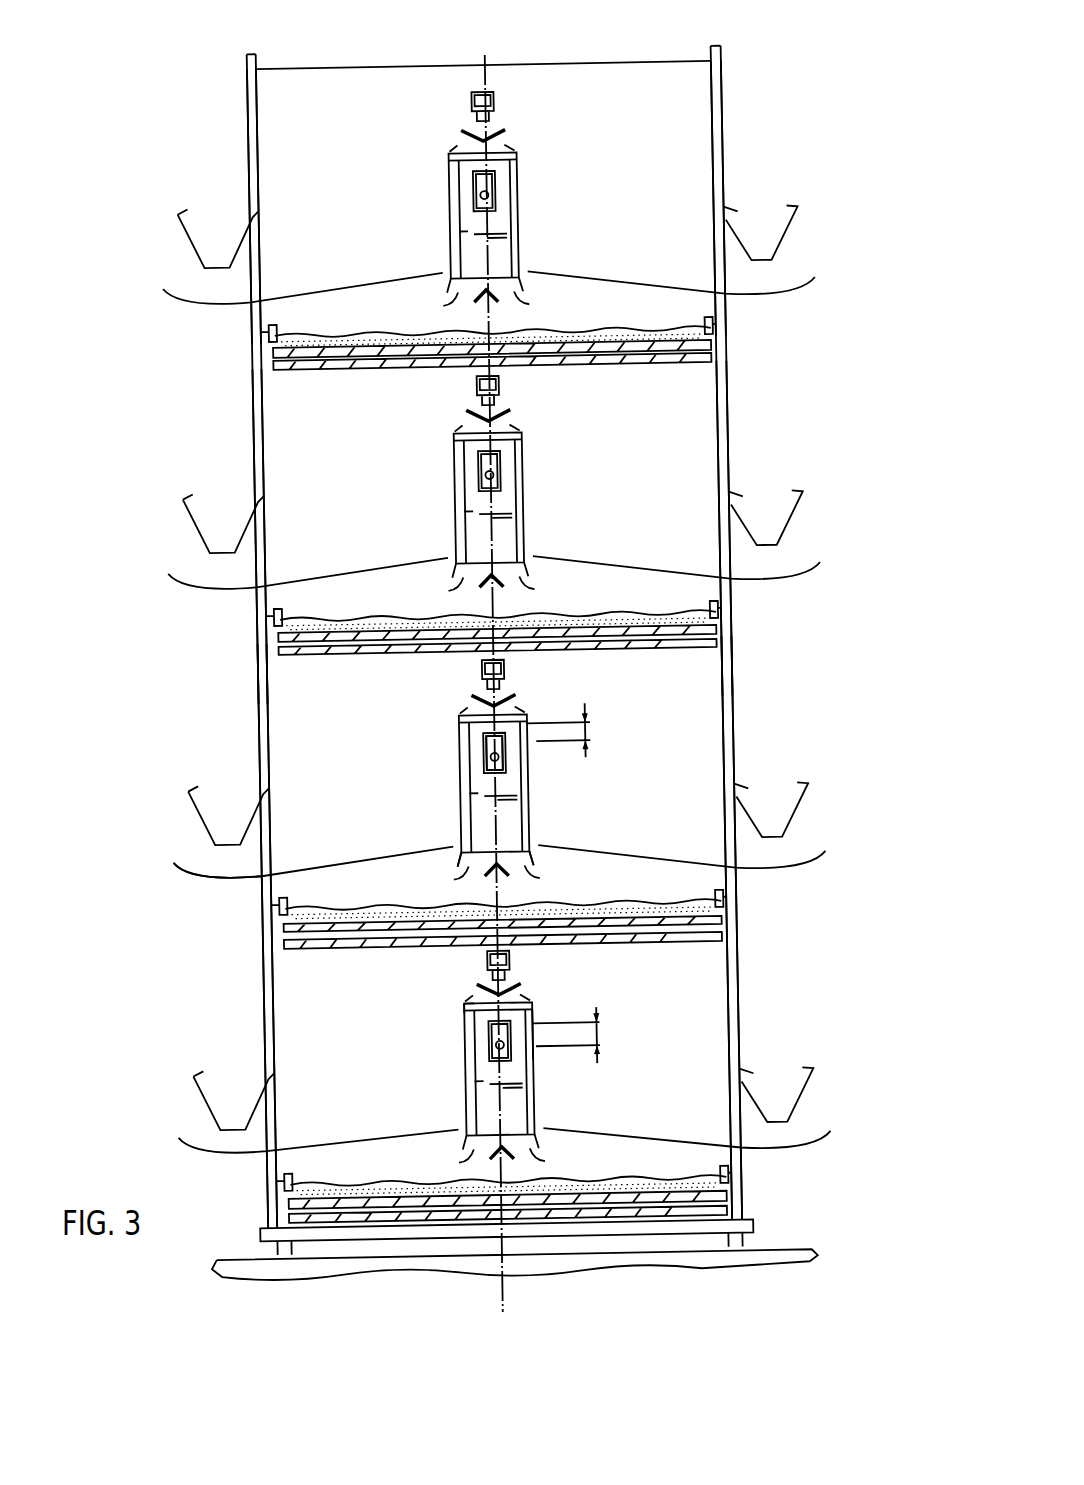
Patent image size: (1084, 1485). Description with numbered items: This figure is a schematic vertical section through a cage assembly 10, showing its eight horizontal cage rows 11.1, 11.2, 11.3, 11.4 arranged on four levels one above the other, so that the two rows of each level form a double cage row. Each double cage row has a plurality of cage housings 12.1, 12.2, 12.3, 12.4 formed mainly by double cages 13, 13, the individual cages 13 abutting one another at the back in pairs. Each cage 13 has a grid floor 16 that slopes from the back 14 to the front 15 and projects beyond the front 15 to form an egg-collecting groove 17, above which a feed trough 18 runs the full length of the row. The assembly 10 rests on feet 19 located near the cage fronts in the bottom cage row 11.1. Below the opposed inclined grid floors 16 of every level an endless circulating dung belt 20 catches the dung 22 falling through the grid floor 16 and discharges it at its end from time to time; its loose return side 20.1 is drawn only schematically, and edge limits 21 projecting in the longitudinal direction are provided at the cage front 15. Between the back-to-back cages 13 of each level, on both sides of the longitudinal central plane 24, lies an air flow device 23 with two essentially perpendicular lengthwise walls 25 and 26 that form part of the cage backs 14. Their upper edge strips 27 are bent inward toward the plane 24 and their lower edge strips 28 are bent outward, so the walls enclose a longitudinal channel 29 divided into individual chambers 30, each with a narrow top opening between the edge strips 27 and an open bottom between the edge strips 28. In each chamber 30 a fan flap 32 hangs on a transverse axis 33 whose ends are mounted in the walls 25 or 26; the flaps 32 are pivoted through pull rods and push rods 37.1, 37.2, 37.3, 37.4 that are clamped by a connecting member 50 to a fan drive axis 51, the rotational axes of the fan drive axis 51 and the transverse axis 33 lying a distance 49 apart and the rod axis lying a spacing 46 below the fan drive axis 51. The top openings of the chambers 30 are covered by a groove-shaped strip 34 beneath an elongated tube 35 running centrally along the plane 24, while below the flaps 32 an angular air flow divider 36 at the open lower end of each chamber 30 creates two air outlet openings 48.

The cage assembly 10 is at (637, 53).
The cage row 11.1 is at (729, 1045).
The cage row 11.2 is at (734, 767).
The cage row 11.3 is at (733, 447).
The cage row 11.4 is at (725, 172).
The cage housing 12.1 is at (228, 986).
The cage housing 12.2 is at (233, 718).
The cage housing 12.3 is at (233, 432).
The cage housing 12.4 is at (239, 122).
The cage 13 is at (689, 122).
The back 14 is at (446, 820).
The front 15 is at (247, 659).
The grid floor 16 is at (596, 280).
The egg-collecting groove 17 is at (185, 885).
The feed trough 18 is at (787, 243).
The feet 19 is at (256, 1248).
The dung belt 20 is at (654, 930).
The return side of belt 20.1 is at (346, 364).
The edge limits 21 is at (265, 321).
The dung 22 is at (655, 337).
The air flow device 23 is at (517, 646).
The longitudinal central plane 24 is at (478, 68).
The lengthwise wall 25 is at (448, 204).
The lengthwise wall 26 is at (519, 197).
The upper edge strips 27 is at (519, 149).
The lower edge strips 28 is at (435, 859).
The channel 29 is at (512, 1036).
The chamber 30 is at (515, 243).
The fan flap 32 is at (463, 238).
The transverse axis 33 is at (517, 171).
The strip 34 is at (462, 140).
The elongated tube 35 is at (496, 92).
The angular air flow divider 36 is at (501, 298).
The pull rod and push rod 37.1 is at (469, 1045).
The pull rod and push rod 37.2 is at (471, 760).
The pull rod and push rod 37.3 is at (473, 470).
The pull rod and push rod 37.4 is at (476, 187).
The spacing 46 is at (582, 1034).
The air outlet openings 48 is at (451, 299).
The distance 49 is at (578, 737).
The connecting member 50 is at (495, 758).
The fan drive axis 51 is at (453, 1005).